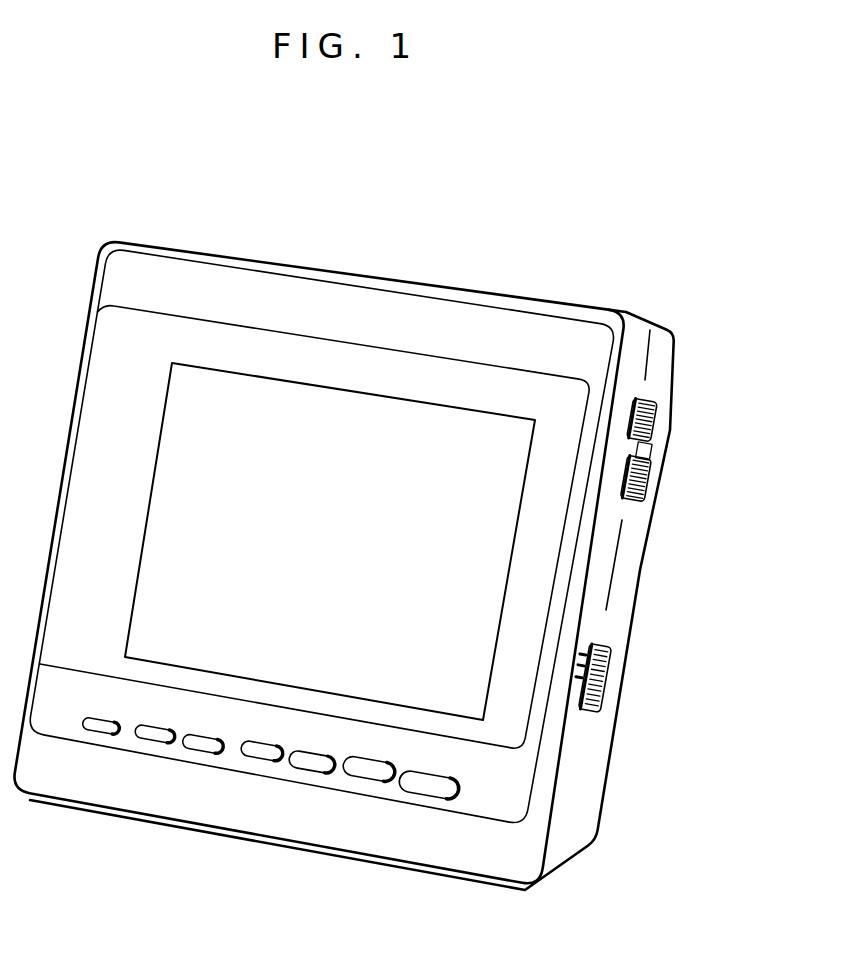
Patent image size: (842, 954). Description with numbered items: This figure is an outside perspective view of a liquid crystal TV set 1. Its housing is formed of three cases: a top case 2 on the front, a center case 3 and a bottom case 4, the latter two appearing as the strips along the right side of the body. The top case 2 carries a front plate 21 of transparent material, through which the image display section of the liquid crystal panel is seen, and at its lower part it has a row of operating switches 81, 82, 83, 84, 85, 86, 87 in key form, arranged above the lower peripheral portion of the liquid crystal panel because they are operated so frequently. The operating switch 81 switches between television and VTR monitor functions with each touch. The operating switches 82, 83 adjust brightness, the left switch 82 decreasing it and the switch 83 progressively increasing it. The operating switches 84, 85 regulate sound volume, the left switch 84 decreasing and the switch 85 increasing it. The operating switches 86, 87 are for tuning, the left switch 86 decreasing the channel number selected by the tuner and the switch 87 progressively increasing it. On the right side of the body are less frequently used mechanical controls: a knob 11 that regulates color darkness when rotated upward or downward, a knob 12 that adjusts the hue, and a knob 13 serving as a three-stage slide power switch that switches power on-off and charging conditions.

The liquid crystal TV set 1 is at (262, 187).
The top case 2 is at (441, 307).
The front plate 21 is at (488, 427).
The center case 3 is at (637, 333).
The bottom case 4 is at (667, 340).
The knob 11 is at (657, 415).
The knob 12 is at (645, 475).
The knob 13 is at (605, 675).
The operating switch 81 is at (97, 728).
The operating switch 82 is at (150, 737).
The operating switch 83 is at (200, 747).
The operating switch 84 is at (260, 755).
The operating switch 85 is at (310, 763).
The operating switch 86 is at (370, 773).
The operating switch 87 is at (427, 787).